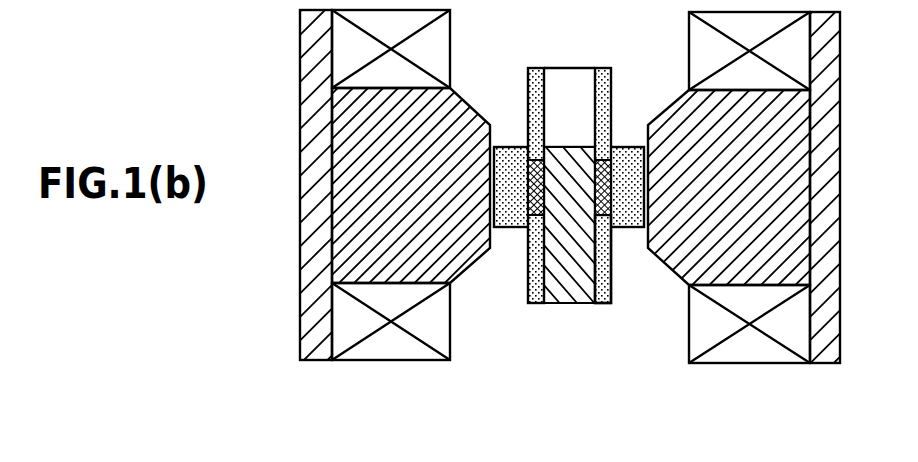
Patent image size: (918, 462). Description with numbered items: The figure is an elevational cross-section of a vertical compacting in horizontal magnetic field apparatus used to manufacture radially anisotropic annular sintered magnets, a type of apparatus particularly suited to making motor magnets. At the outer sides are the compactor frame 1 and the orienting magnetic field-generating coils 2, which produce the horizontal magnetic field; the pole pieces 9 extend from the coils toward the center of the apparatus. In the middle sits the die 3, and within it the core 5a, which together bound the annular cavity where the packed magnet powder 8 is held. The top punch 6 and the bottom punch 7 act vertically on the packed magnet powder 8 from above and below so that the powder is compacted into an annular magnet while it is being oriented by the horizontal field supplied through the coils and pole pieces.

The compactor frame 1 is at (832, 107).
The orienting magnetic field-generating coils 2 is at (751, 347).
The die 3 is at (504, 160).
The core 5a is at (573, 262).
The top punch 6 is at (605, 125).
The bottom punch 7 is at (603, 258).
The packed magnet powder 8 is at (530, 190).
The pole pieces 9 is at (347, 116).